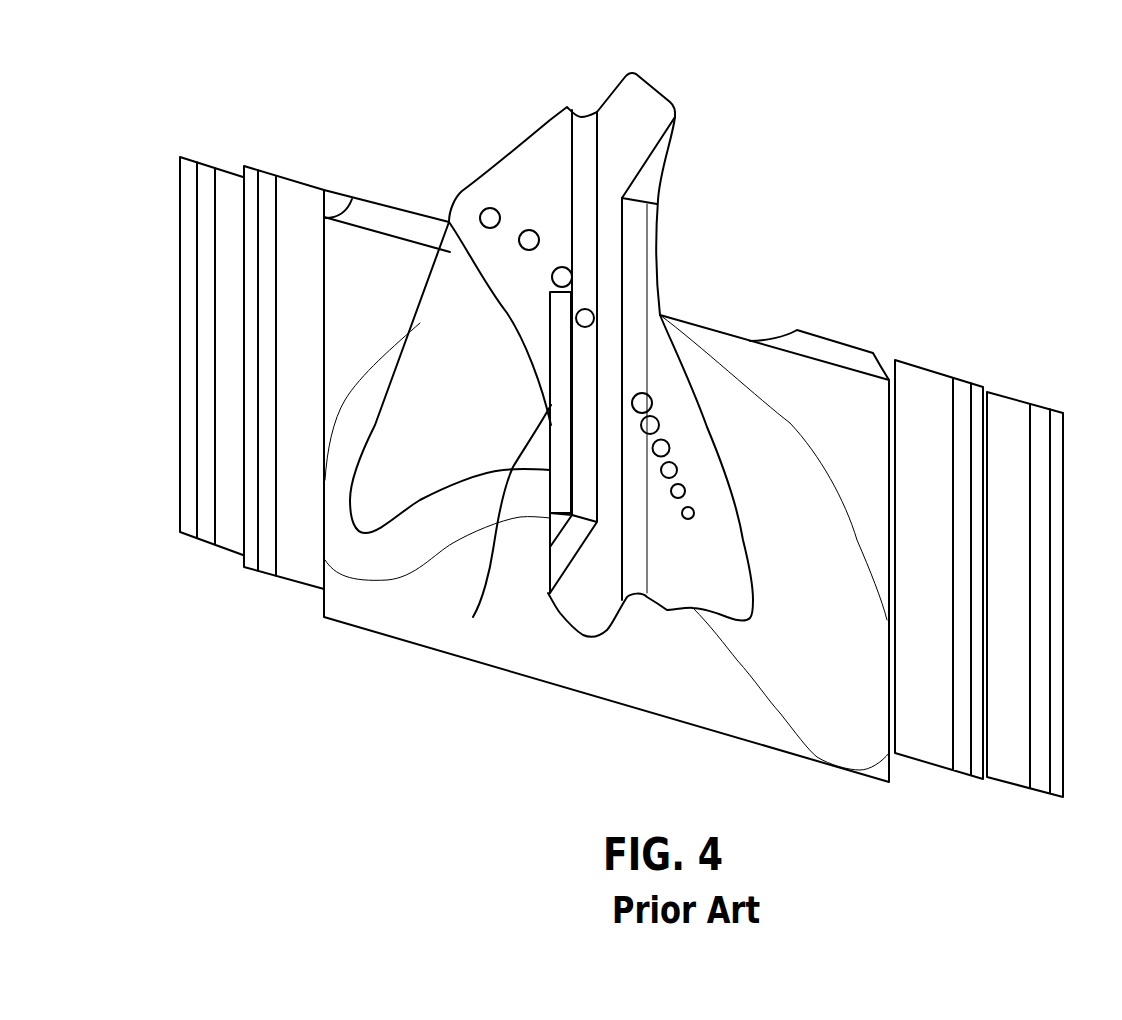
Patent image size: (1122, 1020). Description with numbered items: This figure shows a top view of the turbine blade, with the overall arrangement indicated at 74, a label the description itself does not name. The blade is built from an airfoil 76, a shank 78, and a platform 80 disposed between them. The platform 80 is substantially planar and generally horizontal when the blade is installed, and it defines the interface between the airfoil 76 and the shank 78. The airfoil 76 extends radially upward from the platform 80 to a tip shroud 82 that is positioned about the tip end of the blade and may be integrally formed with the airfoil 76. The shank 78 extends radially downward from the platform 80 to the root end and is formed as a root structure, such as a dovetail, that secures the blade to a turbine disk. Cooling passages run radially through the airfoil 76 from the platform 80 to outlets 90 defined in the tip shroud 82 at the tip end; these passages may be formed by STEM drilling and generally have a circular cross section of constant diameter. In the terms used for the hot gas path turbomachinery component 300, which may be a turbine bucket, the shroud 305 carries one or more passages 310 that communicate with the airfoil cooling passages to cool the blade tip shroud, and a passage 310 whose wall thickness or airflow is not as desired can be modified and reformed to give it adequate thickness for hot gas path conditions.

The vane assembly 74 is at (266, 66).
The airfoil 76 is at (450, 287).
The shank 78 is at (922, 388).
The platform 80 is at (810, 377).
The tip shroud 82 is at (557, 130).
The outlet 90 is at (562, 267).
The hot gas path turbomachinery component 300 is at (442, 393).
The shroud 305 is at (636, 71).
The passage 310 is at (473, 617).